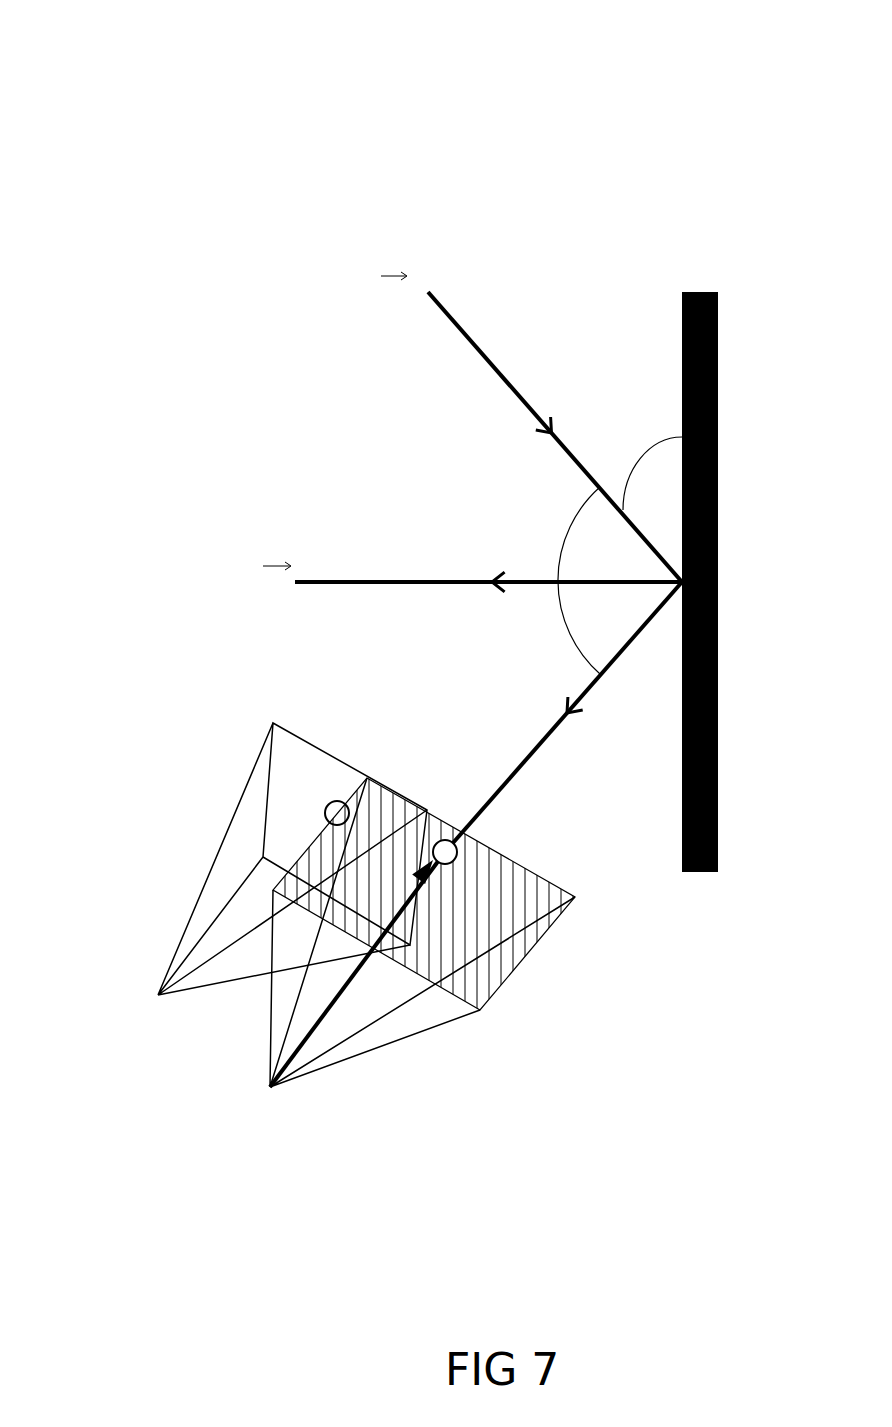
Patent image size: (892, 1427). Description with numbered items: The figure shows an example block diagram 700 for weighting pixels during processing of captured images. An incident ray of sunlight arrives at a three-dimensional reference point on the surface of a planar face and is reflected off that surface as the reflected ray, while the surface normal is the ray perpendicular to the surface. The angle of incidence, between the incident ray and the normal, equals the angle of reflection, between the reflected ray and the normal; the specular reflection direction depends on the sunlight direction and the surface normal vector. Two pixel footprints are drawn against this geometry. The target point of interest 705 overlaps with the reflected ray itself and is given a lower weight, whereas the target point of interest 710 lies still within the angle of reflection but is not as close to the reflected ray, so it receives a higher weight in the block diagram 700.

The block diagram 700 is at (67, 62).
The target point of interest 705 is at (446, 840).
The target point of interest 710 is at (338, 801).